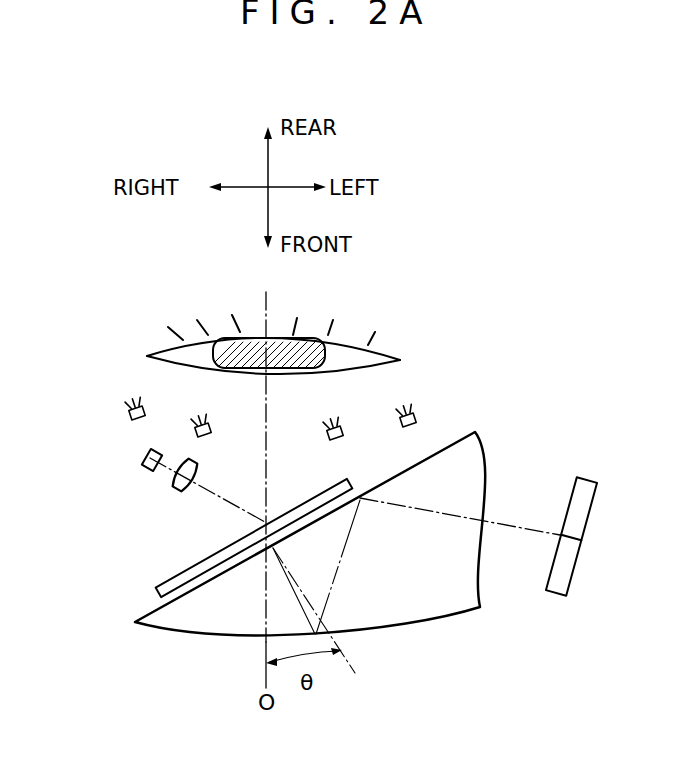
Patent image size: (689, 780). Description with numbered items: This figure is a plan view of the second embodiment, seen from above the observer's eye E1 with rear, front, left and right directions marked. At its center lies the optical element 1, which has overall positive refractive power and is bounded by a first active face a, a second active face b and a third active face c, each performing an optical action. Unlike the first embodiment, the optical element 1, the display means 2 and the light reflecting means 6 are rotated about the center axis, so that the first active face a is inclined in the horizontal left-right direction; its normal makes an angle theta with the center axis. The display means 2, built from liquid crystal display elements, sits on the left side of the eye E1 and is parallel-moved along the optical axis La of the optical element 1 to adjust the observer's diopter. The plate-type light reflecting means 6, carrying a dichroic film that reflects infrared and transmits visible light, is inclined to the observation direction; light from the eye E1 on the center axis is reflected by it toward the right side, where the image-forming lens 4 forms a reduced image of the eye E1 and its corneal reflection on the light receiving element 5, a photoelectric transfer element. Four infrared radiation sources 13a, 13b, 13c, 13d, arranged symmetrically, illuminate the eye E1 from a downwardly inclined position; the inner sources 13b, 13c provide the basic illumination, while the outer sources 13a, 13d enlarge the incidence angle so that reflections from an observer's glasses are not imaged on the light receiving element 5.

The optical element 1 is at (457, 606).
The display means 2 is at (596, 503).
The image-forming lens 4 is at (175, 492).
The light receiving element 5 is at (147, 472).
The light reflecting means 6 is at (155, 590).
The infrared radiation source 13a is at (128, 410).
The infrared radiation source 13b is at (193, 430).
The infrared radiation source 13c is at (350, 437).
The infrared radiation source 13d is at (425, 423).
The eye of observer E1 is at (383, 357).
The first active face a is at (458, 443).
The second active face b is at (390, 628).
The third active face c is at (486, 465).
The optical axis La is at (518, 527).